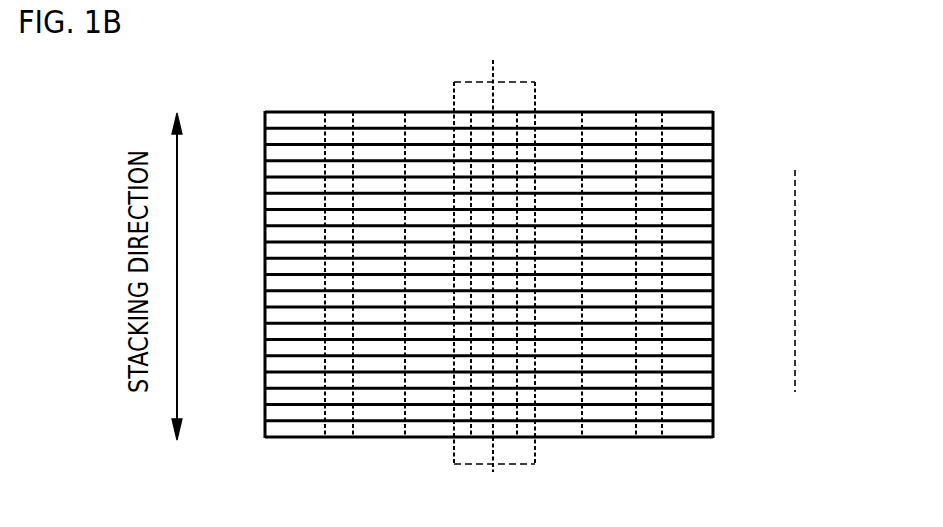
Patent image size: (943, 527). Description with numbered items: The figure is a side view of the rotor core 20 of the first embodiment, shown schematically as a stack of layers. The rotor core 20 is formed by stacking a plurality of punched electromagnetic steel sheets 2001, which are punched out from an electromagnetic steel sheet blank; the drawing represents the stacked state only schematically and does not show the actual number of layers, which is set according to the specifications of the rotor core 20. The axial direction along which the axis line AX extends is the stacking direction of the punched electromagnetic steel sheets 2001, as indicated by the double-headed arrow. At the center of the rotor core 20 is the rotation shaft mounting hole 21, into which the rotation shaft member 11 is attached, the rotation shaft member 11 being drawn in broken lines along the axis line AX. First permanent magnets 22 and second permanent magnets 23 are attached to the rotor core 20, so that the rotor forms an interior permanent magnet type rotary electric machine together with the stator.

The rotation shaft member 11 is at (482, 82).
The rotor core 20 is at (885, 457).
The rotation shaft mounting hole 21 is at (452, 129).
The first permanent magnets 22 is at (322, 127).
The second permanent magnets 23 is at (405, 127).
The punched electromagnetic steel sheets 2001 is at (713, 117).
The axis line AX is at (494, 72).